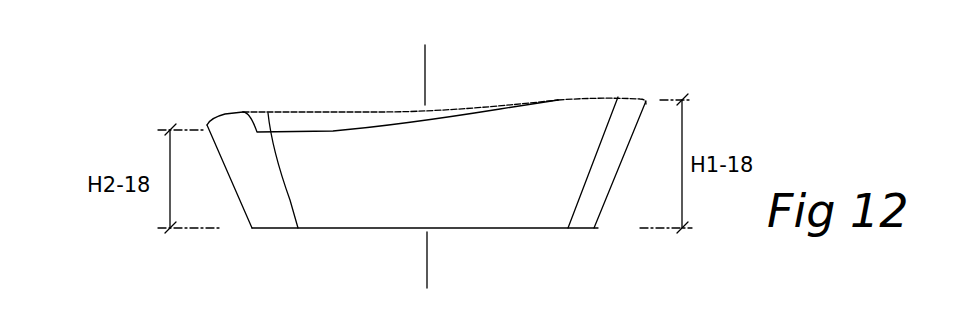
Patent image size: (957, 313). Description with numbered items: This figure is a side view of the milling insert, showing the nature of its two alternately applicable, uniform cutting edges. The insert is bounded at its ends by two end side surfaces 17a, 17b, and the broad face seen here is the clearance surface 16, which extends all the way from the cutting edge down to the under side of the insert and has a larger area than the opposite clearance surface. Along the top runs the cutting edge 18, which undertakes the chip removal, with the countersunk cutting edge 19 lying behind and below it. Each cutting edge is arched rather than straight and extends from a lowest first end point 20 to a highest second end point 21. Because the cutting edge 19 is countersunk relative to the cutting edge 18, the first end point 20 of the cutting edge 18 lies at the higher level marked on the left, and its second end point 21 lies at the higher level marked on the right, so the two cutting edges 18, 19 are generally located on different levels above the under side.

The clearance surface 16 is at (550, 170).
The end side surface 17a is at (622, 159).
The end side surface 17b is at (253, 188).
The cutting edge 18 is at (558, 100).
The cutting edge 19 is at (342, 112).
The first end point 20 is at (268, 113).
The second end point 21 is at (618, 97).